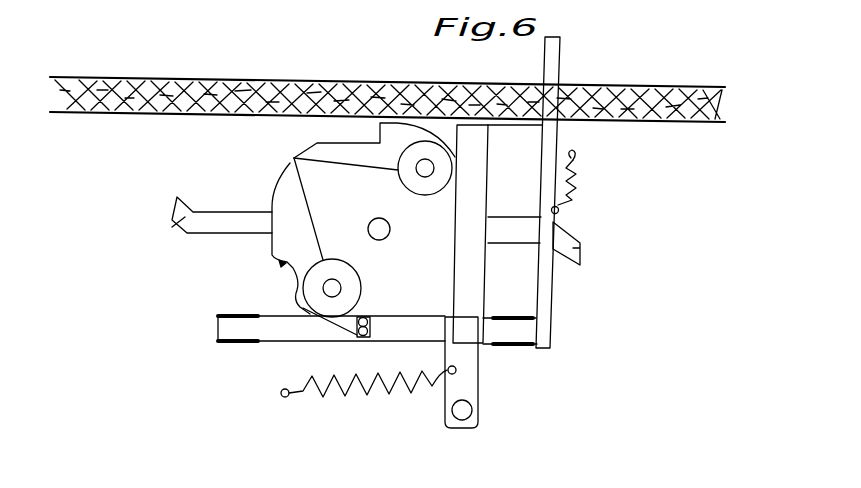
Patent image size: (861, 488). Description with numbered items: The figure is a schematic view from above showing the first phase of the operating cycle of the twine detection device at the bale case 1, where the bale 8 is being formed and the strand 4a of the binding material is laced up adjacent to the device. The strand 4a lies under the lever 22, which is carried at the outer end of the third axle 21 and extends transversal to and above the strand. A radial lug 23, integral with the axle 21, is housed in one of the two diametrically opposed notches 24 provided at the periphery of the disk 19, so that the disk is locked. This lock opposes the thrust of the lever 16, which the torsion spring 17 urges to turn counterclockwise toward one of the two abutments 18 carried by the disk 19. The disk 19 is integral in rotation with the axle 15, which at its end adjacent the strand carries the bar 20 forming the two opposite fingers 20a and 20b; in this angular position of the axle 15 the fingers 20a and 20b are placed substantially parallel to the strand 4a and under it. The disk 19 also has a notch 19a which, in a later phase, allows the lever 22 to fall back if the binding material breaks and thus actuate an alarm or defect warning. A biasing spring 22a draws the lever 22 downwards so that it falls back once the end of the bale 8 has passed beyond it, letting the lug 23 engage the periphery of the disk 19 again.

The bale case 1 is at (181, 127).
The strand 4a is at (340, 92).
The bale 8 is at (110, 97).
The axle 15 is at (390, 237).
The lever 16 is at (470, 283).
The torsion spring 17 is at (373, 397).
The abutments 18 is at (294, 158).
The disk 19 is at (285, 200).
The notch 19a is at (283, 263).
The bar 20 is at (508, 222).
The finger 20a is at (580, 248).
The finger 20b is at (187, 220).
The third axle 21 is at (387, 337).
The lever 22 is at (552, 137).
The biasing spring 22a is at (570, 182).
The radial lug 23 is at (358, 326).
The notches 24 is at (357, 320).